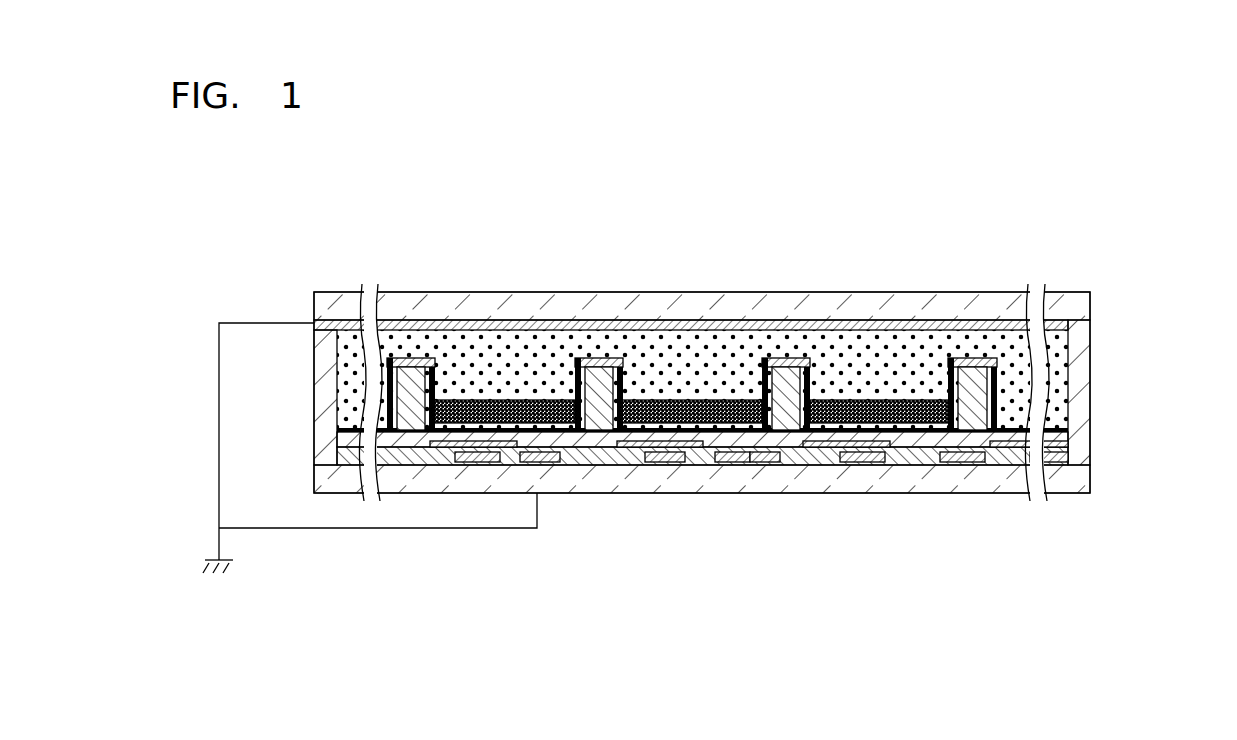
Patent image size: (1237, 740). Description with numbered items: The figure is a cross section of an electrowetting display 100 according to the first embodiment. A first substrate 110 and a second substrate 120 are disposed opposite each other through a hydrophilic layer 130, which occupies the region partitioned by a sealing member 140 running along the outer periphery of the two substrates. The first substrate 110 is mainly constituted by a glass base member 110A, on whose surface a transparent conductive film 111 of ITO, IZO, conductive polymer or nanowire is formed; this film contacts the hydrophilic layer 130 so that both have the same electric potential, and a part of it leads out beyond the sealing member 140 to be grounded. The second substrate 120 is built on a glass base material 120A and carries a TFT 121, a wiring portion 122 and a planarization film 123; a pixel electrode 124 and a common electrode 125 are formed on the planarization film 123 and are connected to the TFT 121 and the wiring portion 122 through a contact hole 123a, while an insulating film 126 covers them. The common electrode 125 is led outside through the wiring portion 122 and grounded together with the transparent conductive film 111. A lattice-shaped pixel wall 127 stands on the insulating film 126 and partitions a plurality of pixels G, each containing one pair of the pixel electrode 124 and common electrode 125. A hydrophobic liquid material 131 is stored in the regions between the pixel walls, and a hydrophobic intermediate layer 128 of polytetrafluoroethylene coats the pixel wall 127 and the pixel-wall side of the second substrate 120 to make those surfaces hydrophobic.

The electrowetting display 100 is at (985, 240).
The first substrate 110 is at (773, 282).
The base member 110A is at (1068, 308).
The transparent conductive film 111 is at (340, 322).
The sealing member 140 is at (324, 383).
The hydrophilic layer 130 is at (485, 340).
The hydrophobic liquid material 131 is at (915, 402).
The pixel G is at (697, 380).
The hydrophobic intermediate layer 128 is at (592, 357).
The pixel wall 127 is at (975, 378).
The second substrate 120 is at (713, 530).
The base material 120A is at (885, 576).
The TFT 121 is at (801, 458).
The wiring portion 122 is at (753, 460).
The planarization film 123 is at (1003, 459).
The contact hole 123a is at (656, 460).
The pixel electrode 124 is at (636, 456).
The common electrode 125 is at (766, 460).
The insulating film 126 is at (955, 460).